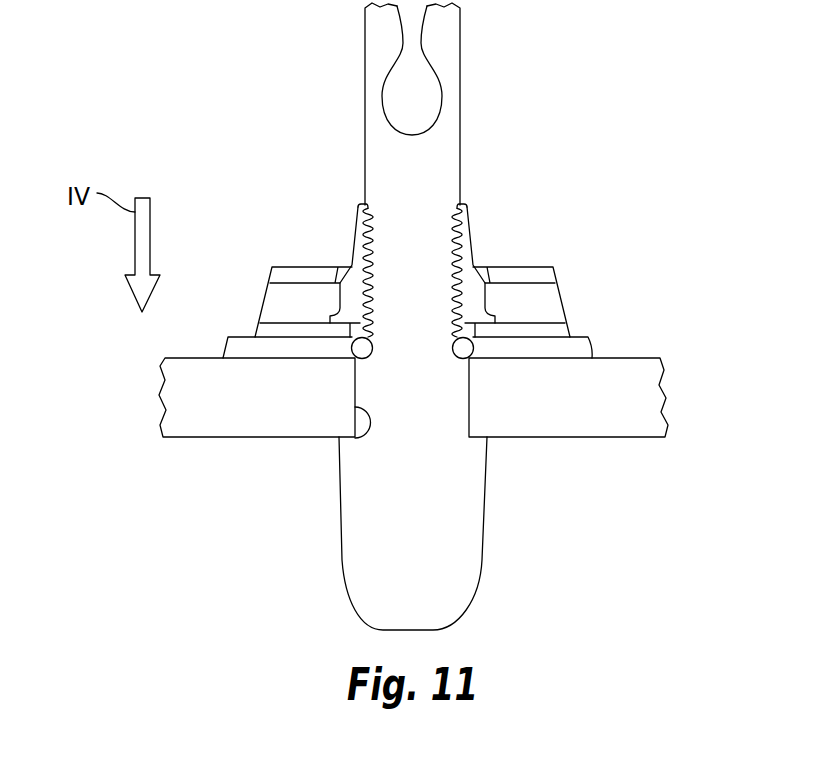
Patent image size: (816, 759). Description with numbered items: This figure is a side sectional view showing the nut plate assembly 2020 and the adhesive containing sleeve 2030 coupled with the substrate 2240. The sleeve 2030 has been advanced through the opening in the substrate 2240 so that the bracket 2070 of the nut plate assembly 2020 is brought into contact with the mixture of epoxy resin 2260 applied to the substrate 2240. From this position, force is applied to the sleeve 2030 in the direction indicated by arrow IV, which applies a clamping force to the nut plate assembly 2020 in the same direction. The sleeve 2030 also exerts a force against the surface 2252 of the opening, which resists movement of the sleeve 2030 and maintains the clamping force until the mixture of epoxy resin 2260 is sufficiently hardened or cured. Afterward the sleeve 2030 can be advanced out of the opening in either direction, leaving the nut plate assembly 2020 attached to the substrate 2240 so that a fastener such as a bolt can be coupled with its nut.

The sleeve 2030 is at (365, 60).
The nut plate assembly 2020 is at (343, 254).
The bracket 2070 is at (268, 277).
The mixture of epoxy resin 2260 is at (592, 350).
The substrate 2240 is at (640, 358).
The surface of the opening 2252 is at (368, 435).